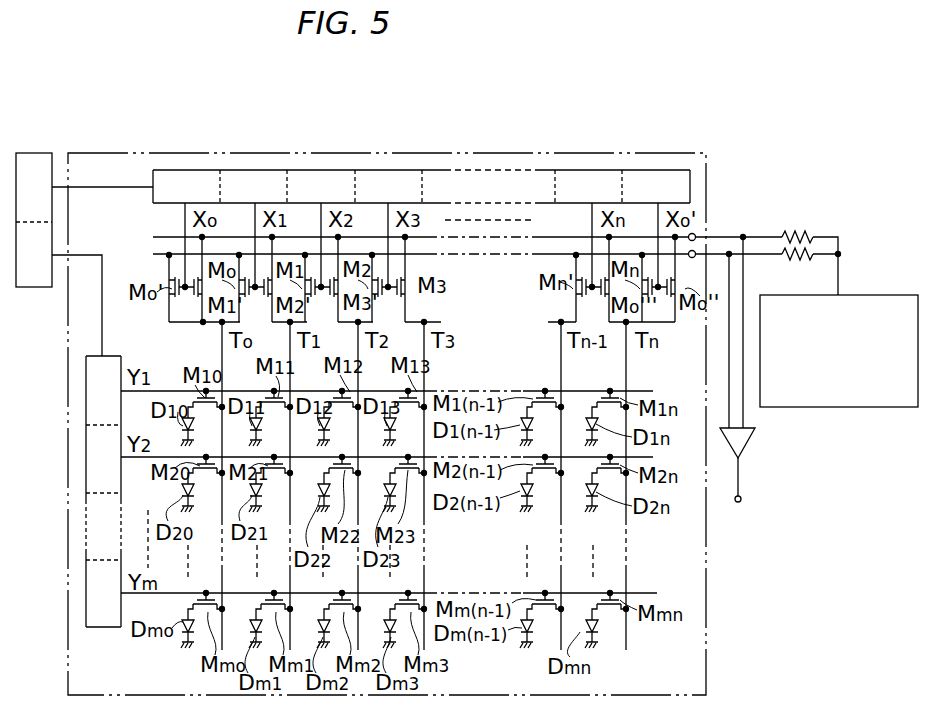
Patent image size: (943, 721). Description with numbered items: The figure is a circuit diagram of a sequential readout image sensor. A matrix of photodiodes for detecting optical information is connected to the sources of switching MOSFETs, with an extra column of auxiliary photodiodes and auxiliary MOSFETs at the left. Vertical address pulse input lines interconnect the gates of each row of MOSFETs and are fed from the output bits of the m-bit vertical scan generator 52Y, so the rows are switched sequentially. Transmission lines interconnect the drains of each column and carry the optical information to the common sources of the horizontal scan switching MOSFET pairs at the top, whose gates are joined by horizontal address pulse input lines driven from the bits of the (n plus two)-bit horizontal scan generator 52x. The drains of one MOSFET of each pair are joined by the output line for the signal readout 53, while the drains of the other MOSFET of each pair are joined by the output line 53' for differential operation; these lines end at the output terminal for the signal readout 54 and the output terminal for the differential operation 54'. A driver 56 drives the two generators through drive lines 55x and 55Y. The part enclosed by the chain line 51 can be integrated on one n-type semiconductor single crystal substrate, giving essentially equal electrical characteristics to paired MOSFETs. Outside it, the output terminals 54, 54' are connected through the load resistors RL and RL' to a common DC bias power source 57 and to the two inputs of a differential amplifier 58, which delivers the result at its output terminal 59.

The chain line 51 is at (620, 153).
The horizontal scan generator 52x is at (322, 170).
The vertical scan generator 52Y is at (86, 372).
The output line for the signal readout 53 is at (495, 250).
The output line for differential operation 53' is at (497, 273).
The output terminal for the signal readout 54 is at (717, 212).
The output terminal for the differential operation 54' is at (721, 232).
The drive line 55x is at (115, 187).
The drive line 55Y is at (102, 300).
The driver 56 is at (36, 153).
The common DC bias power source 57 is at (856, 295).
The differential amplifier 58 is at (748, 442).
The output terminal 59 is at (741, 500).
The load resistor RL is at (796, 216).
The load resistor RL' is at (801, 273).